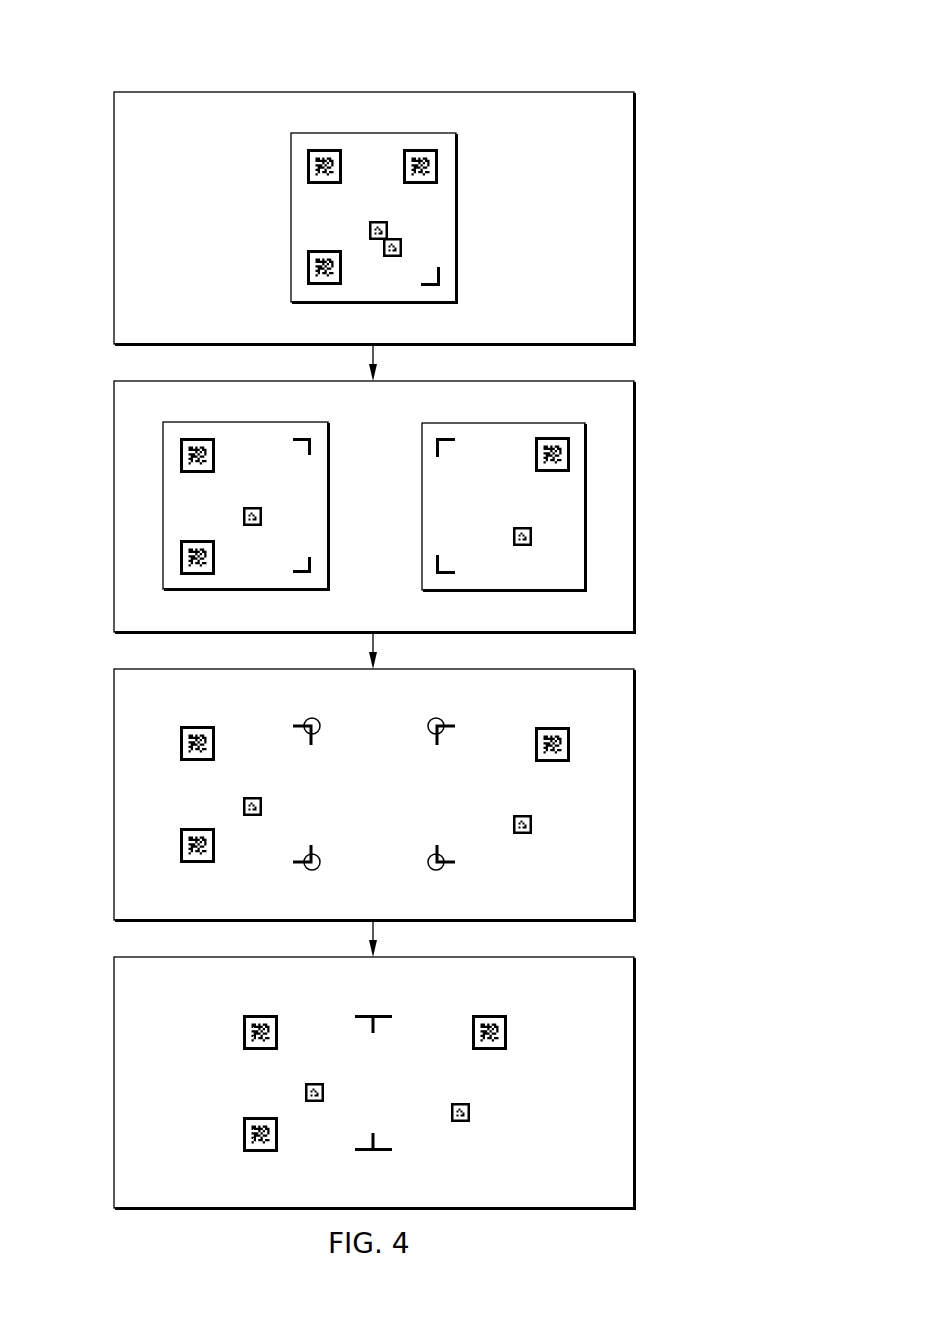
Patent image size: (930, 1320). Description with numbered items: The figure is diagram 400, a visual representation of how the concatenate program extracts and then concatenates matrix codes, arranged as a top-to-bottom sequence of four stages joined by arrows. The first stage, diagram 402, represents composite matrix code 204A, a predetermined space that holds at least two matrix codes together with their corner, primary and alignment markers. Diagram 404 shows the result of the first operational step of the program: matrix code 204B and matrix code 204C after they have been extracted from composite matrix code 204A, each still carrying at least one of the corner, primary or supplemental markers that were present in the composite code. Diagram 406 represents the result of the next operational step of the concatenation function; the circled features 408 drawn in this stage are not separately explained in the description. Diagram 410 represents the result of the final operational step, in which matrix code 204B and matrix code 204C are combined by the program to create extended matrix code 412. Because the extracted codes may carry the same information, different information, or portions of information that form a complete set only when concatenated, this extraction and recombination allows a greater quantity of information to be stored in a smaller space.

The diagram 400 is at (706, 134).
The diagram 402 is at (634, 219).
The composite matrix code 204A is at (423, 133).
The diagram 404 is at (634, 507).
The matrix code 204B is at (585, 452).
The matrix code 204C is at (163, 469).
The diagram 406 is at (634, 795).
The corner alignment points 408 is at (312, 718).
The diagram 410 is at (634, 1085).
The extended matrix code 412 is at (243, 1030).